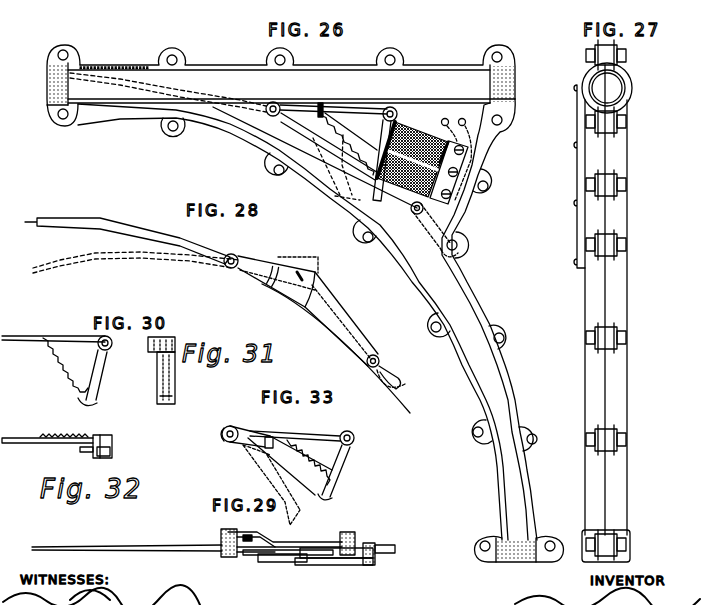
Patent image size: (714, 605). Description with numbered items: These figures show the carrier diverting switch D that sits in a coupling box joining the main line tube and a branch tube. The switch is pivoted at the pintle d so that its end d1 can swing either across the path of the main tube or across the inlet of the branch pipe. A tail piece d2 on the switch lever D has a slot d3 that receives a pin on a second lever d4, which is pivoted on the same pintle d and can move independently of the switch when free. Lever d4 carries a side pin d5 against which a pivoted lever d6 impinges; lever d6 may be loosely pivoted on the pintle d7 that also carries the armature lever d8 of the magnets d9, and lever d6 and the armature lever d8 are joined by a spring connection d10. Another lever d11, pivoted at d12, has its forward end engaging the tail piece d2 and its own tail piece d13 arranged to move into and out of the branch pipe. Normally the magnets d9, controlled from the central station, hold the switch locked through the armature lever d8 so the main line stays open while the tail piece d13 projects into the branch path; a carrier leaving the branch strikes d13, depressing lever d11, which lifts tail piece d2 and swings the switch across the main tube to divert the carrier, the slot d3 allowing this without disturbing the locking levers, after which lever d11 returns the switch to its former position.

In FIG. 26, the carrier diverting switch D is at (203, 150).
In FIG. 28, the carrier diverting switch D is at (221, 309).
In FIG. 29, the carrier diverting switch D is at (138, 537).
In FIG. 26, the switch pintle d is at (277, 97).
In FIG. 28, the switch pintle d is at (235, 255).
In FIG. 26, the end of switch d1 is at (168, 92).
In FIG. 28, the end of switch d1 is at (127, 231).
In FIG. 26, the tail piece of switch lever d2 is at (322, 105).
In FIG. 28, the tail piece of switch lever d2 is at (288, 294).
In FIG. 33, the tail piece of switch lever d2 is at (269, 442).
In FIG. 29, the tail piece of switch lever d2 is at (272, 562).
In FIG. 28, the slot d3 is at (268, 281).
In FIG. 26, the lever d4 is at (297, 118).
In FIG. 33, the lever d4 is at (248, 432).
In FIG. 29, the lever d4 is at (320, 566).
In FIG. 32, the side pin d5 is at (112, 452).
In FIG. 33, the side pin d5 is at (248, 440).
In FIG. 29, the side pin d5 is at (245, 560).
In FIG. 26, the pivoted lever d6 is at (382, 107).
In FIG. 30, the pivoted lever d6 is at (57, 334).
In FIG. 32, the pivoted lever d6 is at (125, 428).
In FIG. 33, the pivoted lever d6 is at (298, 432).
In FIG. 29, the pivoted lever d6 is at (317, 541).
In FIG. 33, the pintle d7 is at (355, 438).
In FIG. 26, the armature lever d8 is at (430, 123).
In FIG. 33, the armature lever d8 is at (332, 473).
In FIG. 26, the magnets d9 is at (452, 152).
In FIG. 26, the spring connection d10 is at (348, 150).
In FIG. 30, the spring connection d10 is at (60, 367).
In FIG. 33, the spring connection d10 is at (301, 460).
In FIG. 26, the lever d11 is at (404, 192).
In FIG. 28, the lever d11 is at (350, 325).
In FIG. 29, the lever d11 is at (333, 566).
In FIG. 26, the pivot d12 is at (425, 222).
In FIG. 28, the pivot d12 is at (379, 358).
In FIG. 26, the tail piece of lever d13 is at (443, 236).
In FIG. 28, the tail piece of lever d13 is at (400, 380).
In FIG. 29, the tail piece of lever d13 is at (395, 545).